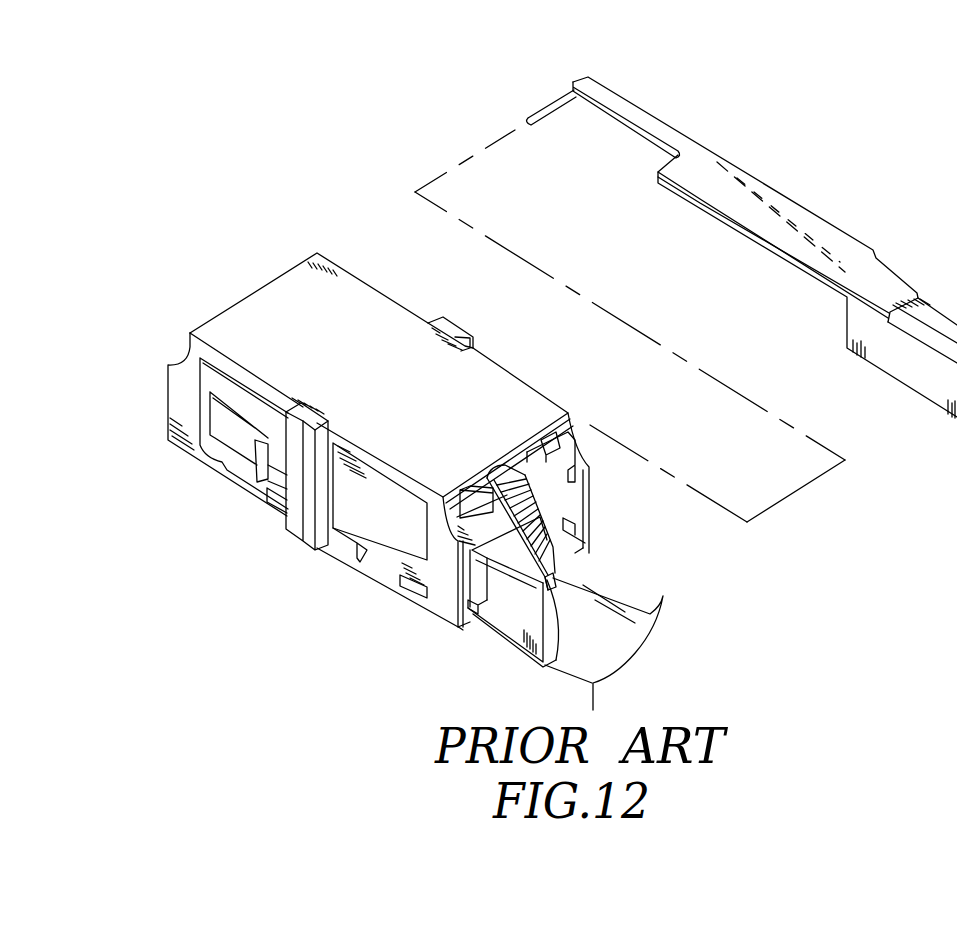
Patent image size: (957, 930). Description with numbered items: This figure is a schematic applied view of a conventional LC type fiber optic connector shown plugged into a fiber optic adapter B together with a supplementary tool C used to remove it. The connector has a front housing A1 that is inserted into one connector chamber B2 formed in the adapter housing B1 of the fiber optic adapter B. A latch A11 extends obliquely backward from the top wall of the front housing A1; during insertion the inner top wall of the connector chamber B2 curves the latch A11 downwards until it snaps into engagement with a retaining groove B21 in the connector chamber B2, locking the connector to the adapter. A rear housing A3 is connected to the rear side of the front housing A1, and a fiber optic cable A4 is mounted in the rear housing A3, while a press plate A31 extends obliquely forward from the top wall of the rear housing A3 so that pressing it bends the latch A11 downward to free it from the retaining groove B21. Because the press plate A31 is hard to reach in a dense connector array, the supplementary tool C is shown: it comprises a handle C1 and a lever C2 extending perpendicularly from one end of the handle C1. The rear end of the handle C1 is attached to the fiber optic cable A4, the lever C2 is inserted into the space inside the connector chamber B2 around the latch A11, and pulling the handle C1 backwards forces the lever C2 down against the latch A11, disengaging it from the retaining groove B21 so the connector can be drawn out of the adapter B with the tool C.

The supplementary tool C is at (740, 158).
The handle C1 is at (835, 243).
The lever C2 is at (547, 110).
The fiber optic adapter B is at (398, 592).
The adapter housing B1 is at (438, 583).
The connector chamber B2 is at (555, 494).
The retaining groove B21 is at (556, 448).
The latch A11 is at (480, 498).
The front housing A1 is at (480, 588).
The rear housing A3 is at (518, 630).
The press plate A31 is at (556, 552).
The fiber optic cable A4 is at (610, 640).